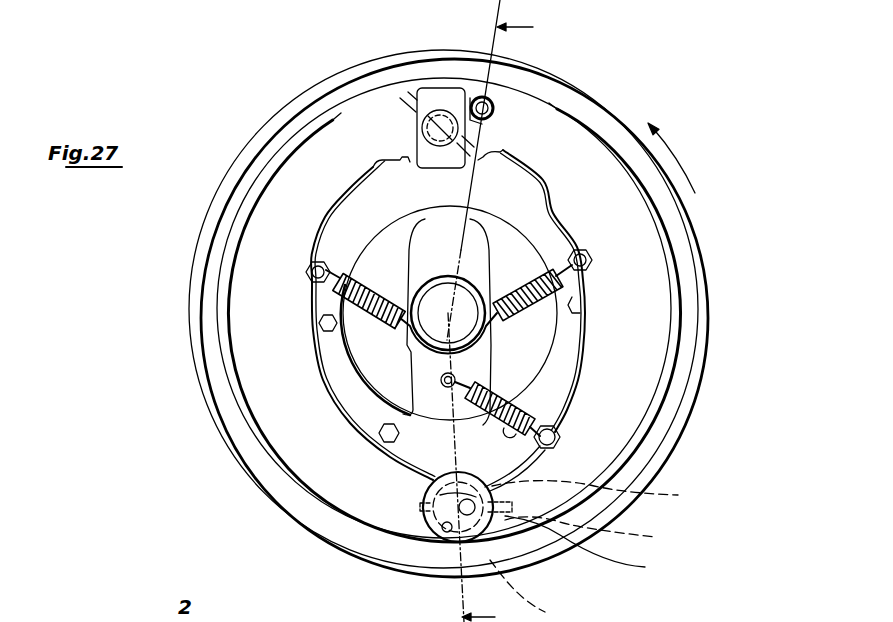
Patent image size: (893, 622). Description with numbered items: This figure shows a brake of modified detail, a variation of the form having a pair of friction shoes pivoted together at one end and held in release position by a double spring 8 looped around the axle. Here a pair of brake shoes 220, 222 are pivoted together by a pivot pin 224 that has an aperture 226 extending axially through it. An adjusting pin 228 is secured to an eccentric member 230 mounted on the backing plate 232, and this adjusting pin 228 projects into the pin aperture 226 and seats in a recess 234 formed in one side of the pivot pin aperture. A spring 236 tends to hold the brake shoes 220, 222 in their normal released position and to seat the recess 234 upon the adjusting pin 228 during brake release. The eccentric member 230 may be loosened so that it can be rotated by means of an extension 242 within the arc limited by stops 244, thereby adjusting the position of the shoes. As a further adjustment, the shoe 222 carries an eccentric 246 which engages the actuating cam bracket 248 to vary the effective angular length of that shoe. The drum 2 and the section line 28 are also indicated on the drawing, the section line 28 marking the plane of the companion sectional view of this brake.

The brake drum 2 is at (684, 259).
The brake shoe 220 is at (243, 275).
The brake shoe 222 is at (655, 348).
The pivot pin 224 is at (432, 518).
The pin aperture 226 is at (452, 525).
The adjusting pin 228 is at (515, 545).
The eccentric member 230 is at (607, 494).
The backing plate 232 is at (558, 406).
The recess 234 is at (597, 549).
The spring 236 is at (449, 324).
The extension 242 is at (539, 591).
The stops 244 is at (602, 532).
The eccentric 246 is at (490, 110).
The actuating cam bracket 248 is at (430, 98).
The section line 28 is at (497, 311).
The double spring 8 is at (362, 279).